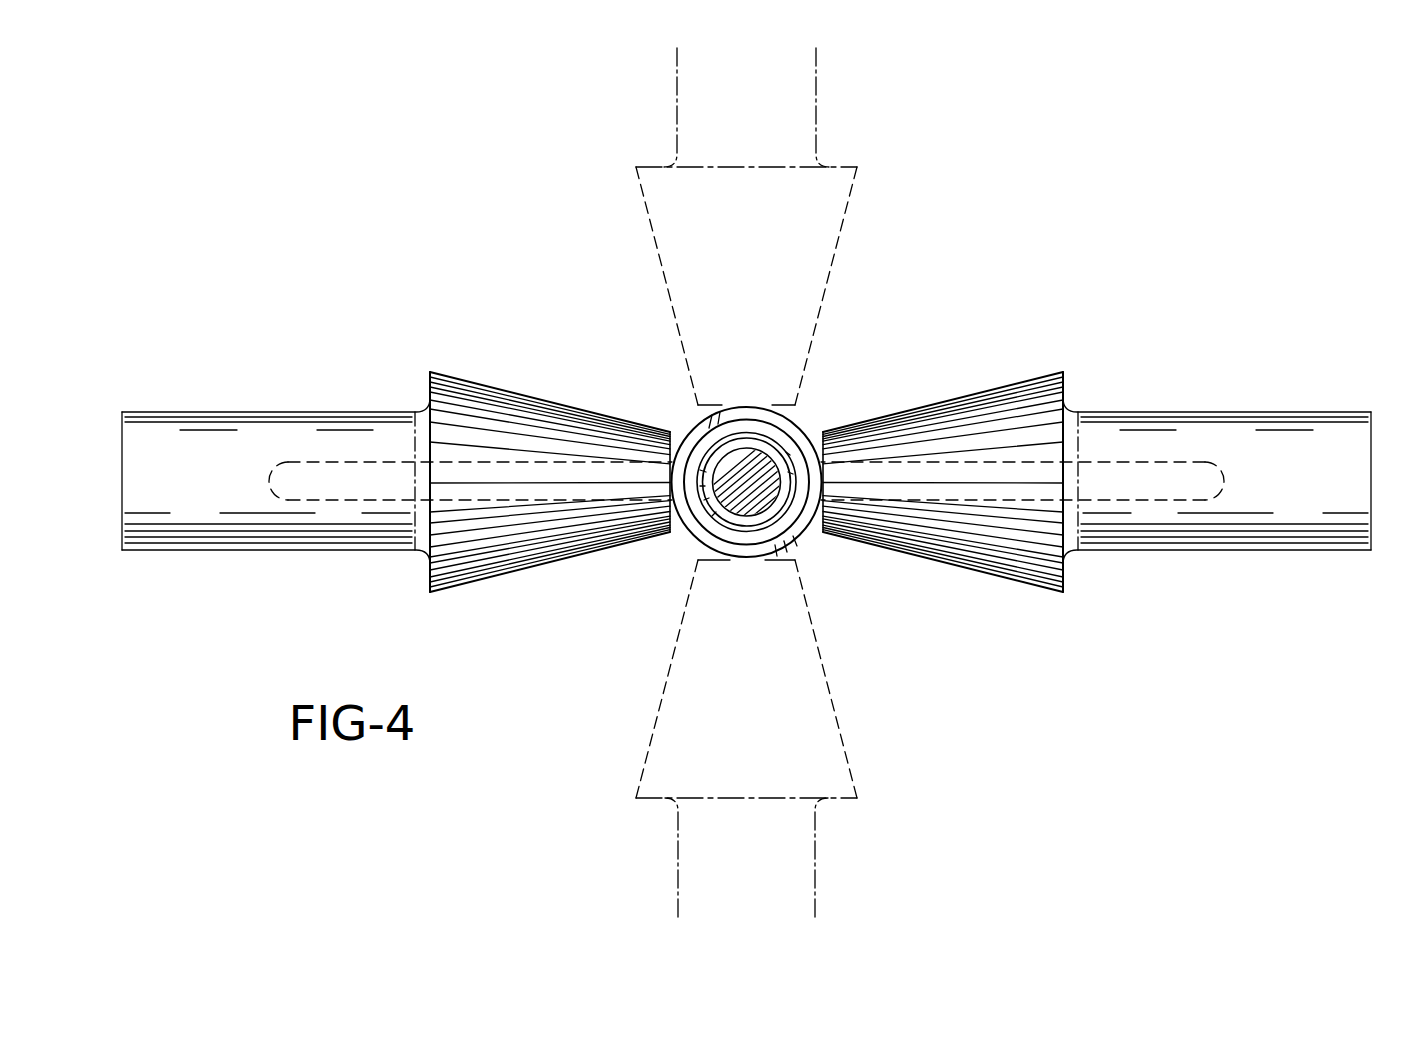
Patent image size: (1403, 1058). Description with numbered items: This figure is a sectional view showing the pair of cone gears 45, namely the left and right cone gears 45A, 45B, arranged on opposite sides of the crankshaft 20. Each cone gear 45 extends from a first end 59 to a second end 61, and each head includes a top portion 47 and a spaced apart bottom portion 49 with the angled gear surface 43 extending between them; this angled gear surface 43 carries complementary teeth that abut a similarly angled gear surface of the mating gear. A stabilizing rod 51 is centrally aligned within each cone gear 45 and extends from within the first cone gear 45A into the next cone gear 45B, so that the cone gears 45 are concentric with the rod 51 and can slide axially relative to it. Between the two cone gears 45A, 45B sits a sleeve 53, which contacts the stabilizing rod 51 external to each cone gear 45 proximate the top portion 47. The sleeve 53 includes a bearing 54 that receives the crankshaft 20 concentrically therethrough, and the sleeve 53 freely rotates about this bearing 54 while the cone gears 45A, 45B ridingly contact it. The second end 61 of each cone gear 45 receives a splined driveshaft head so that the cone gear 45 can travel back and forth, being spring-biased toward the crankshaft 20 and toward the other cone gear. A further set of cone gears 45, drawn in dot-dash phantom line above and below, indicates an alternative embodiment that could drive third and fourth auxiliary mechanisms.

The shaft 20 is at (757, 500).
The angled gear surface 43 is at (542, 399).
The cone gear 45 is at (646, 231).
The first cone gear 45A is at (340, 411).
The second cone gear 45B is at (1153, 411).
The top portion 47 is at (746, 435).
The bottom portion 49 is at (422, 359).
The stabilizing rod 51 is at (282, 472).
The sleeve 53 is at (693, 537).
The bearing 54 is at (748, 539).
The first end 59 is at (660, 409).
The second end 61 is at (120, 392).